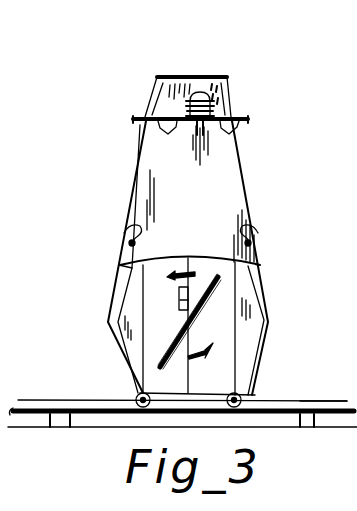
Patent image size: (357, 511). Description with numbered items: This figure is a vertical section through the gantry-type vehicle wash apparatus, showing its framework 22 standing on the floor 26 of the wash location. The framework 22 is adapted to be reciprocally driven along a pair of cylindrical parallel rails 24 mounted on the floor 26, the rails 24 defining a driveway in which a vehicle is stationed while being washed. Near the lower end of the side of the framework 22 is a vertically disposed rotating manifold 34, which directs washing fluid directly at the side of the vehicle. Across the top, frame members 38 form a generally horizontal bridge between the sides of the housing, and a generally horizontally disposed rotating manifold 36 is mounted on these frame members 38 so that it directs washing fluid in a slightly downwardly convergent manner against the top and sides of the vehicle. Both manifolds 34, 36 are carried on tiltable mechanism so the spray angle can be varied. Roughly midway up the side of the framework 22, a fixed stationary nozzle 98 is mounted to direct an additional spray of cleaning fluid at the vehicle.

The framework 22 is at (218, 192).
The parallel rails 24 is at (350, 397).
The floor 26 is at (50, 413).
The vertically disposed rotating manifolds 34 is at (172, 338).
The horizontally disposed rotating manifolds 36 is at (243, 118).
The frame members 38 is at (208, 77).
The stationary nozzles 98 is at (124, 230).